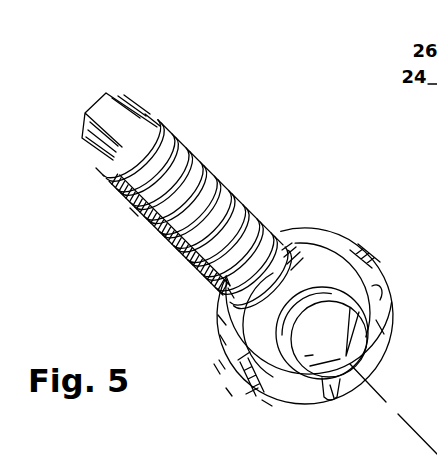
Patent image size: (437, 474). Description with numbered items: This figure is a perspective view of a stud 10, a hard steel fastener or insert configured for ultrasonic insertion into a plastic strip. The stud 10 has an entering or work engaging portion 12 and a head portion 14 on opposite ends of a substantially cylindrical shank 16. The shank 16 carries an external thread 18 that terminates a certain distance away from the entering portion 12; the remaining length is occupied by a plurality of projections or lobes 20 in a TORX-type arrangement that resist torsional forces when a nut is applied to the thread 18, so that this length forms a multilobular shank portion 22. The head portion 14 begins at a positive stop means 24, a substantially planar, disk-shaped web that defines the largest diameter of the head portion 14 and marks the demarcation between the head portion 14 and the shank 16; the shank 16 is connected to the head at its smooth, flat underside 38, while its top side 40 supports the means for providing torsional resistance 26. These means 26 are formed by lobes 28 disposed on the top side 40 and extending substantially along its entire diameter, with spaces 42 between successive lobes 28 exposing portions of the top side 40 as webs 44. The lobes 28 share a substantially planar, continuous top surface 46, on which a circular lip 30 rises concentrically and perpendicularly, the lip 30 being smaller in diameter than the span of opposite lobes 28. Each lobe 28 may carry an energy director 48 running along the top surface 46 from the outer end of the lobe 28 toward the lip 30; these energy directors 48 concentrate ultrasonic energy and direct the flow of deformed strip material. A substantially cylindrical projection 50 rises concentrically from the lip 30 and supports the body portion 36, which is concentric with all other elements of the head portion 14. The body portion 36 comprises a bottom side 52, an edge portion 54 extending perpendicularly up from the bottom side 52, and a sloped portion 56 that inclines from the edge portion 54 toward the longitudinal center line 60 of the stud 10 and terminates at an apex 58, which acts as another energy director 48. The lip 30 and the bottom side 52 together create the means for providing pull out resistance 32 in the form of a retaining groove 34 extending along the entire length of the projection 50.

The stud 10 is at (194, 112).
The entering portion 12 is at (100, 173).
The head portion 14 is at (212, 371).
The shank 16 is at (128, 213).
The external thread 18 is at (199, 165).
The lobes 20 is at (142, 116).
The multilobular shank portion 22 is at (80, 117).
The positive stop means 24 is at (309, 226).
The means for providing torsional resistance 26 is at (393, 340).
The lobes 28 is at (282, 243).
The lip 30 is at (314, 300).
The means for providing pull out resistance 32 is at (364, 369).
The retaining groove 34 is at (222, 340).
The body portion 36 is at (320, 395).
The underside 38 is at (221, 320).
The top side 40 is at (228, 392).
The spaces 42 is at (293, 403).
The webs 44 is at (386, 272).
The top surface 46 is at (338, 258).
The energy directors 48 is at (284, 246).
The projection 50 is at (230, 293).
The bottom side 52 is at (226, 281).
The edge portion 54 is at (221, 364).
The sloped portion 56 is at (379, 289).
The apex 58 is at (367, 359).
The longitudinal center line 60 is at (88, 108).